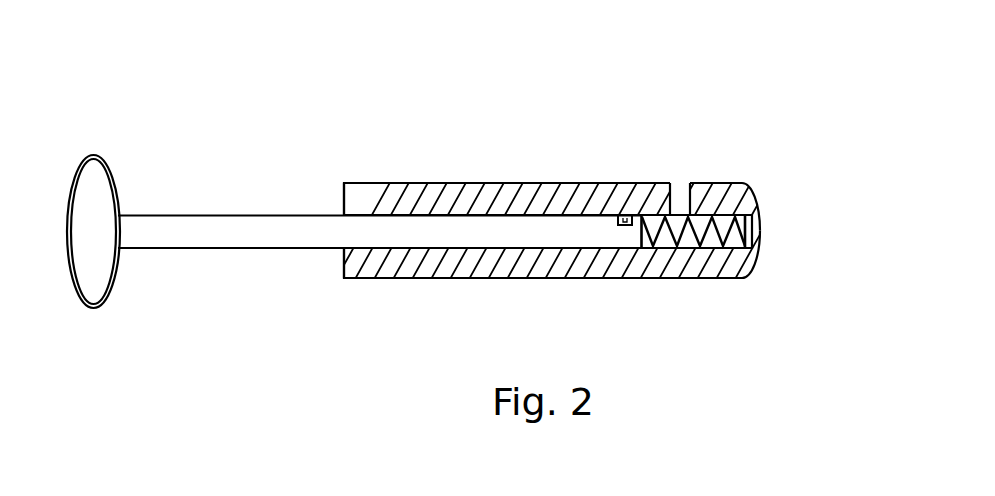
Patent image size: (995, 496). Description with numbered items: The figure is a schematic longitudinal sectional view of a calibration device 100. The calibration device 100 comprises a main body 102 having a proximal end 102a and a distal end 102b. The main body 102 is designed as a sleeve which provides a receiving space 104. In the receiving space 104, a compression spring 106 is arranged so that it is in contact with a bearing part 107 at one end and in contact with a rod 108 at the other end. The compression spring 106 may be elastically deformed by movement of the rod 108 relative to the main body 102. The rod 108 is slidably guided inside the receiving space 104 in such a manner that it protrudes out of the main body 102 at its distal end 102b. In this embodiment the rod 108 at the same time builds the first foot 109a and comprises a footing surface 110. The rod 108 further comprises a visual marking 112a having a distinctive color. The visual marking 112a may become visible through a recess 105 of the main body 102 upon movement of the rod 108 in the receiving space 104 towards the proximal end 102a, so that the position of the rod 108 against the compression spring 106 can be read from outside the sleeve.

The calibration device 100 is at (760, 148).
The main body 102 is at (374, 183).
The proximal end 102a is at (765, 275).
The distal end 102b is at (330, 273).
The receiving space 104 is at (525, 197).
The recess 105 is at (685, 168).
The compression spring 106 is at (741, 194).
The bearing part 107 is at (752, 236).
The rod 108 is at (222, 215).
The first foot 109a is at (379, 232).
The footing surface 110 is at (93, 155).
The visual marking 112a is at (625, 226).